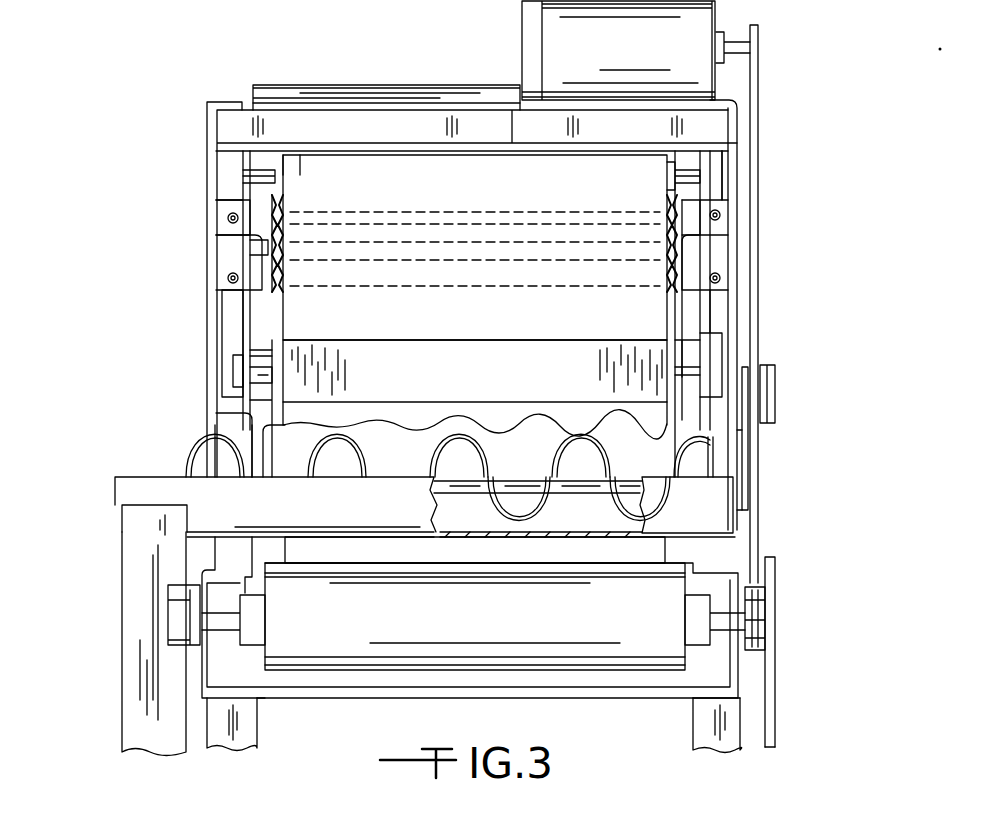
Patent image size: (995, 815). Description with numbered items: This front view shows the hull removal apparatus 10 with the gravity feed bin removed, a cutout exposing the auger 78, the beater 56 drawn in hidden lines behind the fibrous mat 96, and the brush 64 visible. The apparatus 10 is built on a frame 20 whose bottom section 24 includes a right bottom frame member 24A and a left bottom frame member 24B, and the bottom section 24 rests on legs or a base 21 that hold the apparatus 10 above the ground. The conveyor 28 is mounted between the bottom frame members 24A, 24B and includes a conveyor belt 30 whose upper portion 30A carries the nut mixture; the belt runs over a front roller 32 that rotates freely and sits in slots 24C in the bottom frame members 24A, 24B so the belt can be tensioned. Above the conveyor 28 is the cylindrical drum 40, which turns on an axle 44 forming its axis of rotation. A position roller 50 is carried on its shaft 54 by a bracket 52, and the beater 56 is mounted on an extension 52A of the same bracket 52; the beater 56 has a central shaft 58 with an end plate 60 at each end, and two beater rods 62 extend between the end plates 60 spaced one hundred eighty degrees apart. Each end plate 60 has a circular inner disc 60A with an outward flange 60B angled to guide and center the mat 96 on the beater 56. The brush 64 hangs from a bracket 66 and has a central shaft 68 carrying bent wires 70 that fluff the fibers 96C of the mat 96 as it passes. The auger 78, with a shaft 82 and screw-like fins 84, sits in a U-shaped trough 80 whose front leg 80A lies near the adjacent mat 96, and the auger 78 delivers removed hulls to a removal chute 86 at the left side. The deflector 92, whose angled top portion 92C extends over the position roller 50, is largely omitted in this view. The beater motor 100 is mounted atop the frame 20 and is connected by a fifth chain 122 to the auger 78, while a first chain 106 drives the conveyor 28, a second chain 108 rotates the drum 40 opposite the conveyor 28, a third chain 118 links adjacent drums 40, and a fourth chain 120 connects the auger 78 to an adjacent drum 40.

The apparatus 10 is at (132, 62).
The frame 20 is at (242, 115).
The legs or base 21 is at (727, 745).
The bottom section 24 is at (202, 698).
The right bottom frame member 24A is at (722, 748).
The left bottom frame member 24B is at (257, 705).
The slots 24C is at (196, 644).
The conveyor 28 is at (567, 655).
The conveyor belt 30 is at (406, 655).
The upper portion 30A is at (677, 557).
The front roller 32 is at (776, 612).
The drum 40 is at (587, 507).
The axle 44 is at (258, 415).
The position roller 50 is at (700, 160).
The bracket 52 is at (213, 140).
The extension 52A is at (228, 258).
The shaft 54 is at (250, 177).
The beater 56 is at (277, 257).
The central shaft 58 is at (262, 240).
The end plate 60 is at (677, 225).
The inner disc 60A is at (672, 262).
The flange 60B is at (677, 200).
The beater rods 62 is at (388, 290).
The brush 64 is at (272, 350).
The bracket 66 is at (243, 330).
The central shaft 68 is at (694, 370).
The bent wires 70 is at (668, 348).
The auger 78 is at (137, 490).
The trough 80 is at (117, 500).
The front leg 80A is at (212, 508).
The shaft 82 is at (588, 485).
The screw-like fins 84 is at (201, 458).
The removal chute 86 is at (142, 570).
The deflector 92 is at (346, 95).
The angled top portion 92C is at (276, 97).
The fibrous mat 96 is at (456, 170).
The fibers 96C is at (331, 190).
The beater motor 100 is at (546, 32).
The first chain 106 is at (776, 725).
The second chain 108 is at (758, 333).
The third chain 118 is at (762, 433).
The fourth chain 120 is at (758, 482).
The fifth chain 122 is at (758, 110).